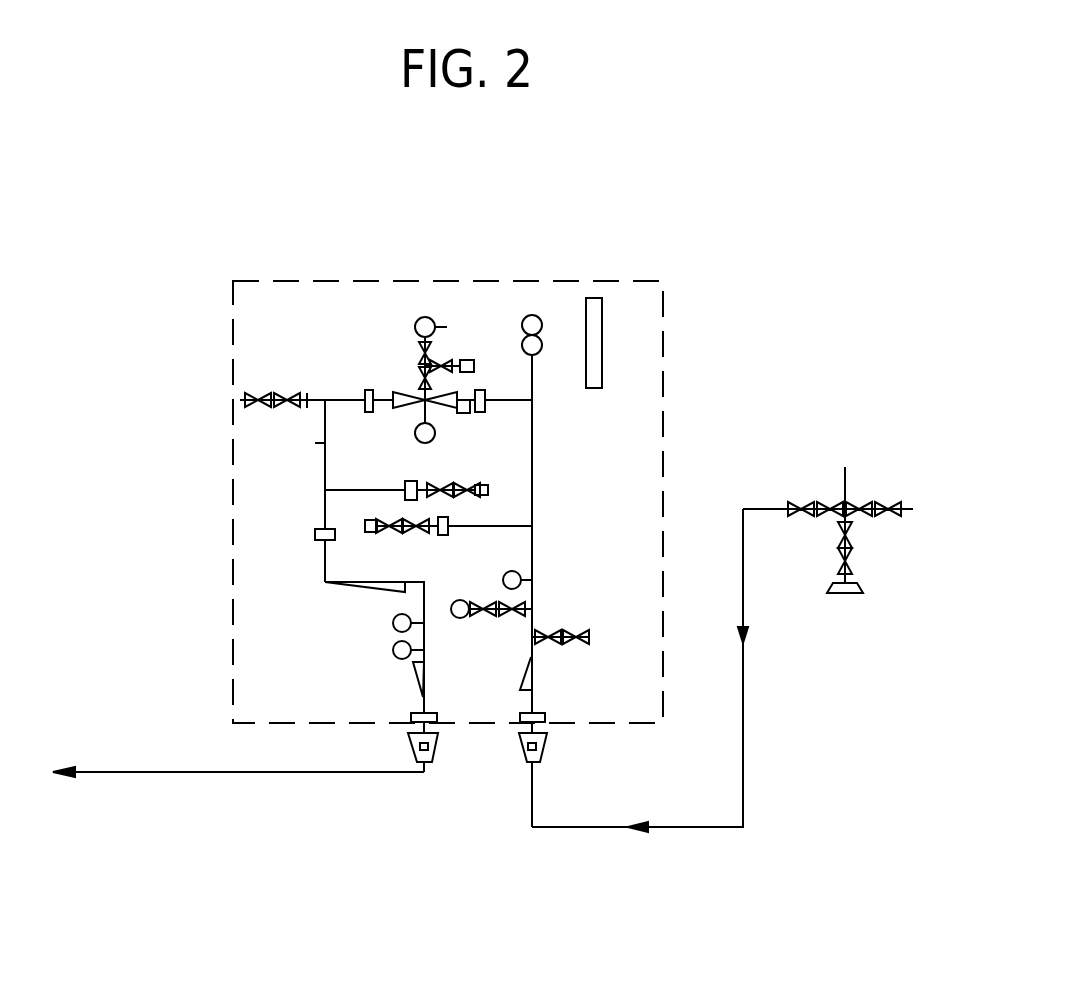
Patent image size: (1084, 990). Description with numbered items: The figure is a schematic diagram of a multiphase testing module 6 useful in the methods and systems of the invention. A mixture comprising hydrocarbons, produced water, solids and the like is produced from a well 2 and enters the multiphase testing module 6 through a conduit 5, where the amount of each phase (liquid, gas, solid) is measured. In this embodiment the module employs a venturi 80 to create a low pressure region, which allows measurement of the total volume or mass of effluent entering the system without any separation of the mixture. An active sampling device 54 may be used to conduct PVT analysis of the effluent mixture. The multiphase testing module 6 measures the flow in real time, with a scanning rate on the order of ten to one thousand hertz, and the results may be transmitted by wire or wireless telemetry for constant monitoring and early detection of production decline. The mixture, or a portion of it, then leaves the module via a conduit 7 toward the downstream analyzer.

The well 2 is at (863, 593).
The conduit 5 is at (700, 827).
The multiphase testing module 6 is at (540, 281).
The conduit 7 is at (240, 772).
The active sampling device 54 is at (602, 342).
The venturi 80 is at (420, 396).